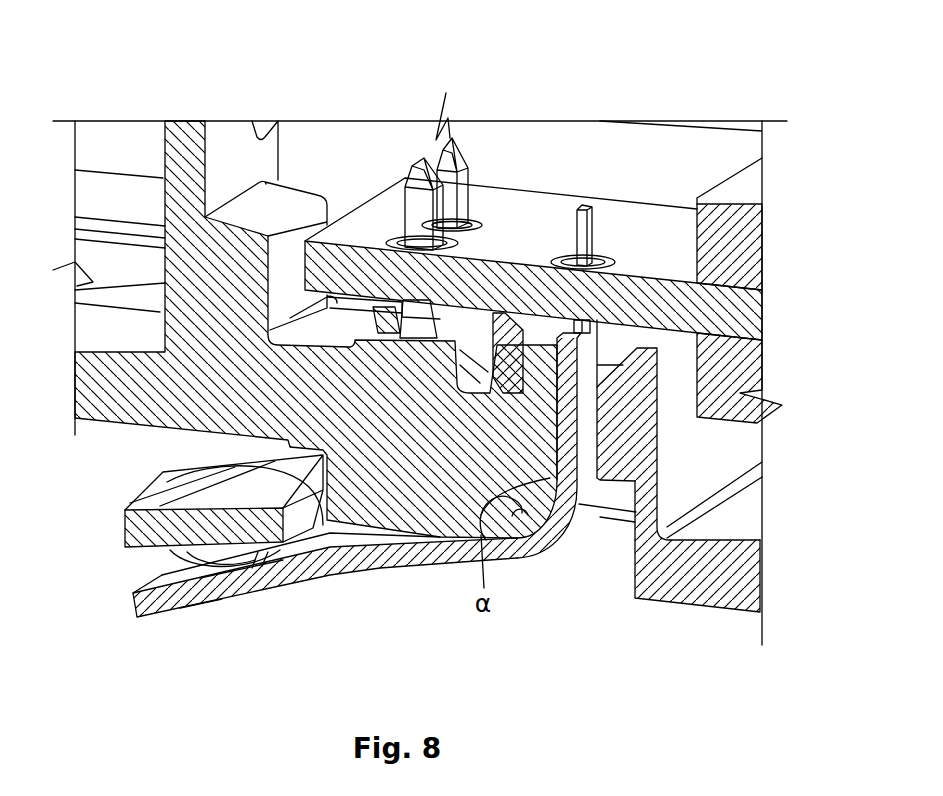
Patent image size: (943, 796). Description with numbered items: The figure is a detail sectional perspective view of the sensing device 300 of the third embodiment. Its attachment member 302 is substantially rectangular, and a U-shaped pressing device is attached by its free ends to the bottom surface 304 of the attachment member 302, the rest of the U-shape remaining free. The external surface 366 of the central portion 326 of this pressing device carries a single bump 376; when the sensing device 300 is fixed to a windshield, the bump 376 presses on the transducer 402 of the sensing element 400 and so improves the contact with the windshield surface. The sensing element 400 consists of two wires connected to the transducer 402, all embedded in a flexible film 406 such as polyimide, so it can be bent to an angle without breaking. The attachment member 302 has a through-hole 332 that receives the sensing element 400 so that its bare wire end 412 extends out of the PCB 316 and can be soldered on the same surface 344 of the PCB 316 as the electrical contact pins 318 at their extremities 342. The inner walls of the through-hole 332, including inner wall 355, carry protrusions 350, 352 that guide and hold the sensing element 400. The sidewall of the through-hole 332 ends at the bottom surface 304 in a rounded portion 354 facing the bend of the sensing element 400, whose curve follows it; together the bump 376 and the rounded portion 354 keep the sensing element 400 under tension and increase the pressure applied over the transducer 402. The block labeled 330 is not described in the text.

The sensing device 300 is at (117, 130).
The attachment member 302 is at (115, 405).
The bottom surface 304 is at (672, 600).
The PCB 316 is at (537, 207).
The electrical contact pins 318 is at (467, 200).
The central portion 326 is at (147, 557).
The retention block 330 is at (130, 507).
The through-hole 332 is at (624, 326).
The extremities 342 is at (458, 95).
The surface 344 is at (558, 213).
The protrusion 350 is at (557, 428).
The protrusion 352 is at (620, 447).
The rounded portion 354 is at (517, 513).
The inner wall 355 is at (650, 500).
The external surface 366 is at (127, 553).
The bump 376 is at (197, 557).
The sensing element 400 is at (283, 588).
The transducer 402 is at (222, 600).
The flexible film 406 is at (327, 555).
The bare wire end 412 is at (587, 207).